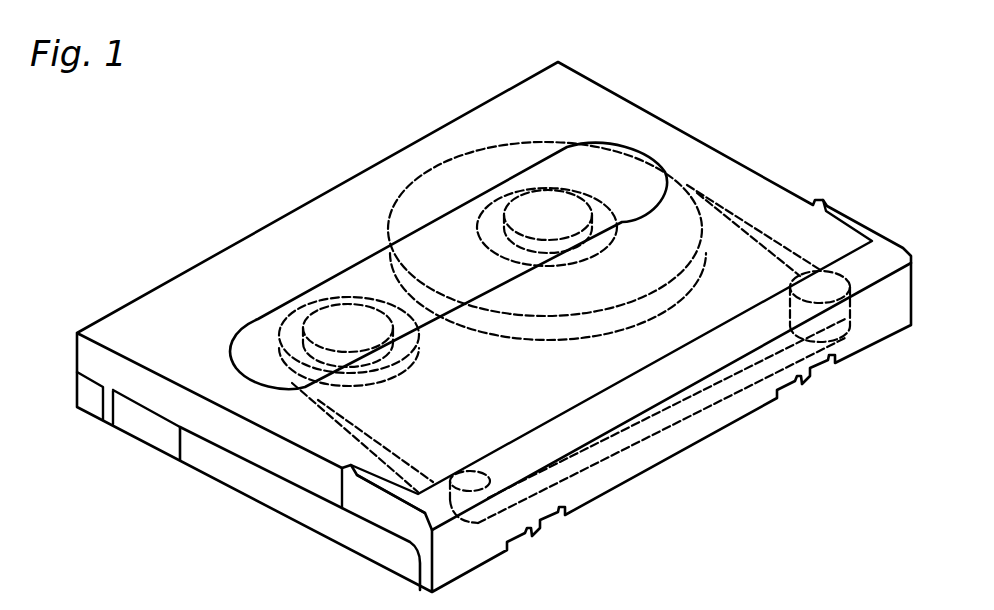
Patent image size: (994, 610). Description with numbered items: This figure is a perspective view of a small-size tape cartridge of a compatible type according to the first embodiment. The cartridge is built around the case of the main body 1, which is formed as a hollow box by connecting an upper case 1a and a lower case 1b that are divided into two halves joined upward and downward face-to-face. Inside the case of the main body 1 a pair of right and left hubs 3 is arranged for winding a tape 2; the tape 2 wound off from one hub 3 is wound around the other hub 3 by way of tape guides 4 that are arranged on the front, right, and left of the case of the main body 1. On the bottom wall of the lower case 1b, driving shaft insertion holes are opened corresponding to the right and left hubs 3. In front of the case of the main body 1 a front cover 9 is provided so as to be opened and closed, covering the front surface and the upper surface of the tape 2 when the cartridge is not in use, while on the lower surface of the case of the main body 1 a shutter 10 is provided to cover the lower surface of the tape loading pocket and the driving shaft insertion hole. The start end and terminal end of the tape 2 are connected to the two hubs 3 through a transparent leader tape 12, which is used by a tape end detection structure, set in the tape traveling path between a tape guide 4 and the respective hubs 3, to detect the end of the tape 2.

The main body 1 is at (322, 207).
The upper case 1a is at (125, 330).
The lower case 1b is at (92, 403).
The tape 2 is at (460, 158).
The hub 3 is at (582, 261).
The tape guide 4 is at (790, 284).
The front cover 9 is at (689, 433).
The shutter 10 is at (259, 481).
The transparent leader tape 12 is at (383, 440).